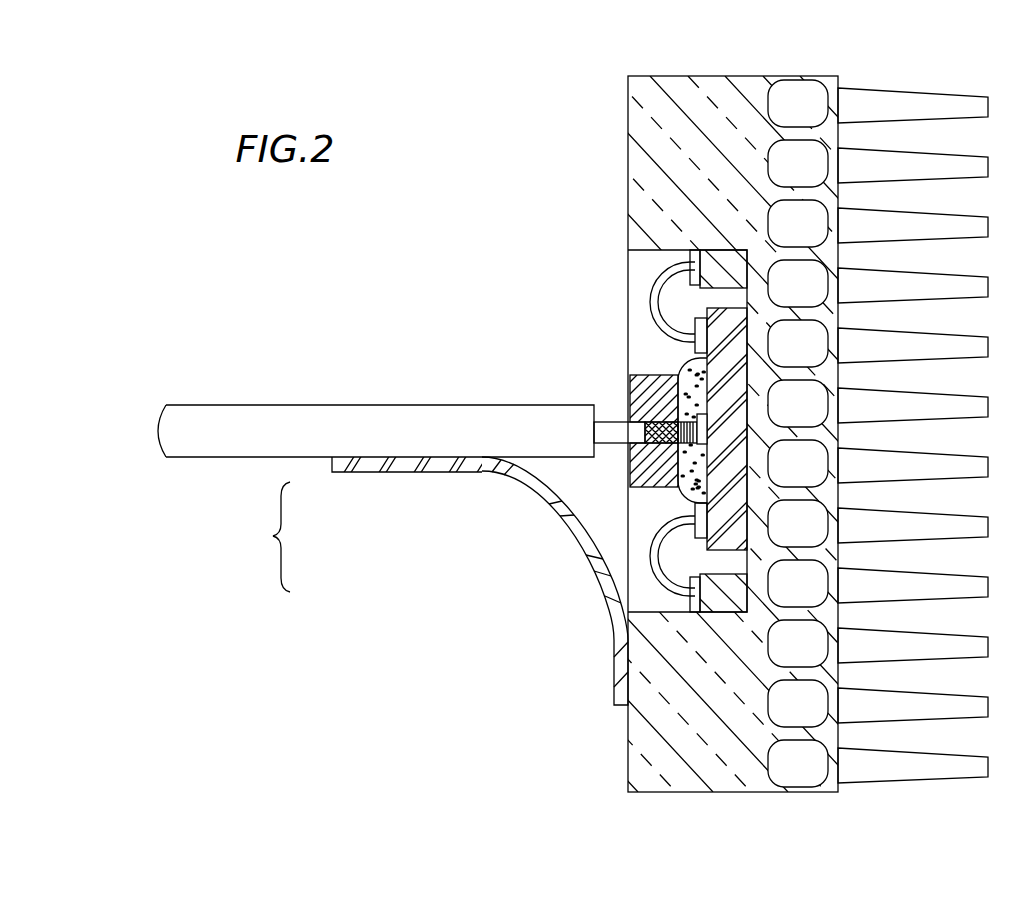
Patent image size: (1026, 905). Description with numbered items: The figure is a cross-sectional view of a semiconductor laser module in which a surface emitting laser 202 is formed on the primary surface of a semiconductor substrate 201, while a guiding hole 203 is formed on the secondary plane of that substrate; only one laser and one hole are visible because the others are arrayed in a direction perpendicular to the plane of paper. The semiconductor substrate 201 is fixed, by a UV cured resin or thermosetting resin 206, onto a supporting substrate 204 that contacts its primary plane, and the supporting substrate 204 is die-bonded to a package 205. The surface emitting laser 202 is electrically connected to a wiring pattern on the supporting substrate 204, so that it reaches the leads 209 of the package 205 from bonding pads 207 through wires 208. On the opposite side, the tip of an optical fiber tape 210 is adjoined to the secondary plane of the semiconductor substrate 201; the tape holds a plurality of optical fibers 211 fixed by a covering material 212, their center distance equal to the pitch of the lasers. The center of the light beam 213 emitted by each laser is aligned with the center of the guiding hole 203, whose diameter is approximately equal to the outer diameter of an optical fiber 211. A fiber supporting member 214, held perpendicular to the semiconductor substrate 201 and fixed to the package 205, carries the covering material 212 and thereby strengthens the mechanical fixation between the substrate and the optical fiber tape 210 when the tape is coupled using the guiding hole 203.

The semiconductor substrate 201 is at (634, 377).
The surface emitting laser 202 is at (630, 397).
The guiding hole 203 is at (594, 443).
The supporting substrate 204 is at (614, 672).
The package 205 is at (708, 766).
The UV cured resin or thermosetting resin 206 is at (698, 474).
The bonding pads 207 is at (694, 325).
The wires 208 is at (655, 283).
The leads 209 is at (787, 98).
The optical fiber tape 210 is at (249, 537).
The optical fibers 211 is at (535, 476).
The covering material 212 is at (465, 450).
The light beam 213 is at (630, 497).
The fiber supporting member 214 is at (403, 460).